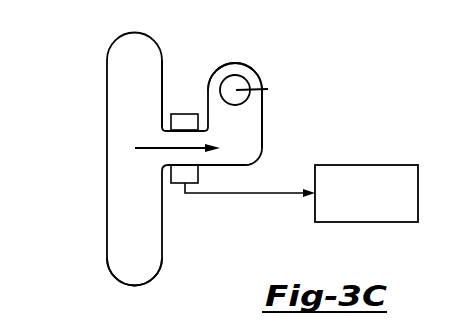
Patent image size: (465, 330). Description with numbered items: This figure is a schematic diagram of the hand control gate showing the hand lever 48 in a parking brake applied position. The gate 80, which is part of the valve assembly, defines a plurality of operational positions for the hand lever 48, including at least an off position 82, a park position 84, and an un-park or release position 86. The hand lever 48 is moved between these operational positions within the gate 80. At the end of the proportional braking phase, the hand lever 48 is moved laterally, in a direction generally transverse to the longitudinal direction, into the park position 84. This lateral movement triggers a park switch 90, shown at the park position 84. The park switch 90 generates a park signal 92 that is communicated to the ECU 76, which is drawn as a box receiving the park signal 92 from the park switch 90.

The hand lever 48 is at (262, 87).
The ECU 76 is at (381, 165).
The gate 80 is at (163, 64).
The off position 82 is at (135, 60).
The park position 84 is at (258, 100).
The release position 86 is at (133, 258).
The park switch 90 is at (186, 114).
The park signal 92 is at (250, 195).